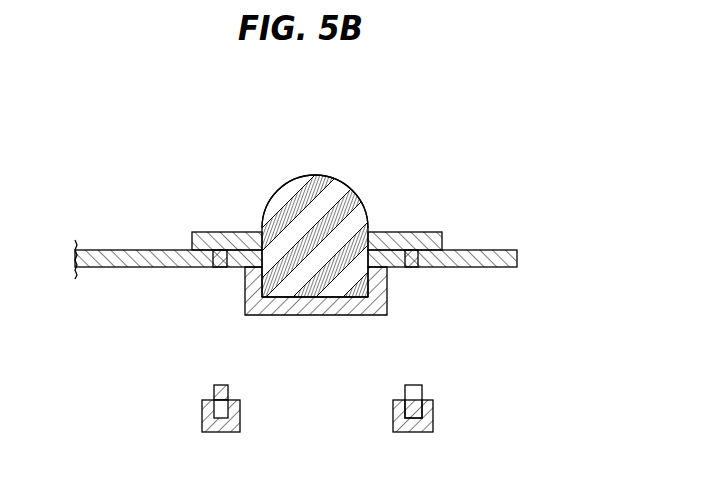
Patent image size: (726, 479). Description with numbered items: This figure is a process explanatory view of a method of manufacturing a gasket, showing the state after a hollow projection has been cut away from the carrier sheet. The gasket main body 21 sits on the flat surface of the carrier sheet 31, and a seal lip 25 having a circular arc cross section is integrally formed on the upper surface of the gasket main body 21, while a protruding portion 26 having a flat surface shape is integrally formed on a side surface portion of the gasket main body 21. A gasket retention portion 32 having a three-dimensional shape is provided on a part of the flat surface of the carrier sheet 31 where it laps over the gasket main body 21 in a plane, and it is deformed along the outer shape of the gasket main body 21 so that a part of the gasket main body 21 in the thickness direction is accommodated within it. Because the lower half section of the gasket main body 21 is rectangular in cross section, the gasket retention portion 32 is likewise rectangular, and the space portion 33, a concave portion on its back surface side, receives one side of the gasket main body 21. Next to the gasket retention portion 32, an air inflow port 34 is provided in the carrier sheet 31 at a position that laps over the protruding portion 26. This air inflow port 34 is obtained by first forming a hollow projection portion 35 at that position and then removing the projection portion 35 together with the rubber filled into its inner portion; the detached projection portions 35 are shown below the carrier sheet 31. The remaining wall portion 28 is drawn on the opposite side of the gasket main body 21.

The gasket main body 21 is at (327, 198).
The seal lip 25 is at (307, 185).
The protruding portion 26 is at (192, 232).
The second wall portion 28 is at (428, 232).
The carrier sheet 31 is at (490, 250).
The gasket retention portion 32 is at (300, 316).
The space portion 33 is at (355, 290).
The air inflow port 34 is at (218, 266).
The projection portion 35 is at (202, 417).